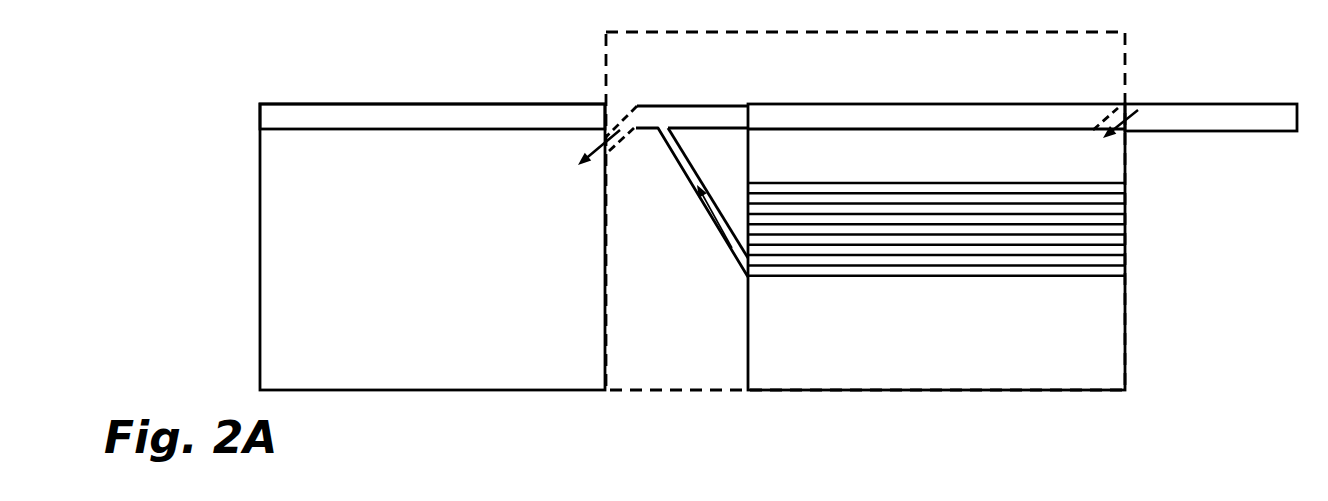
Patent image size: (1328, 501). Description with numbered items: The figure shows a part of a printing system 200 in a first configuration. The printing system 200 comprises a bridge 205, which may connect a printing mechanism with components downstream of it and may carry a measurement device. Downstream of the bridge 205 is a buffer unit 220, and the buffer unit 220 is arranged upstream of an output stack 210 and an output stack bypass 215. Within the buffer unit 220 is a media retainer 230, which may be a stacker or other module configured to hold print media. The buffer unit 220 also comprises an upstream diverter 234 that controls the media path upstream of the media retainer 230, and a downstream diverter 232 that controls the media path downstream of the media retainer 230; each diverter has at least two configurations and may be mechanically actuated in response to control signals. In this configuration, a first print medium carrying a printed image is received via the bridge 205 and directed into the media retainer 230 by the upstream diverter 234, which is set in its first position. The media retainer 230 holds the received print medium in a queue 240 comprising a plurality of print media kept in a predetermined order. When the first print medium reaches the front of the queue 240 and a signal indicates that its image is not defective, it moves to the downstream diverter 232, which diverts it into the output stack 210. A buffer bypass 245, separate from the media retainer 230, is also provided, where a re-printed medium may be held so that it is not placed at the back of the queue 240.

The printing system 200 is at (298, 75).
The bridge 205 is at (1197, 102).
The output stack 210 is at (453, 362).
The output stack bypass 215 is at (427, 103).
The buffer unit 220 is at (886, 66).
The media retainer 230 is at (958, 362).
The downstream diverter 232 is at (621, 147).
The upstream diverter 234 is at (1113, 113).
The queue 240 is at (1145, 183).
The buffer bypass 245 is at (950, 102).